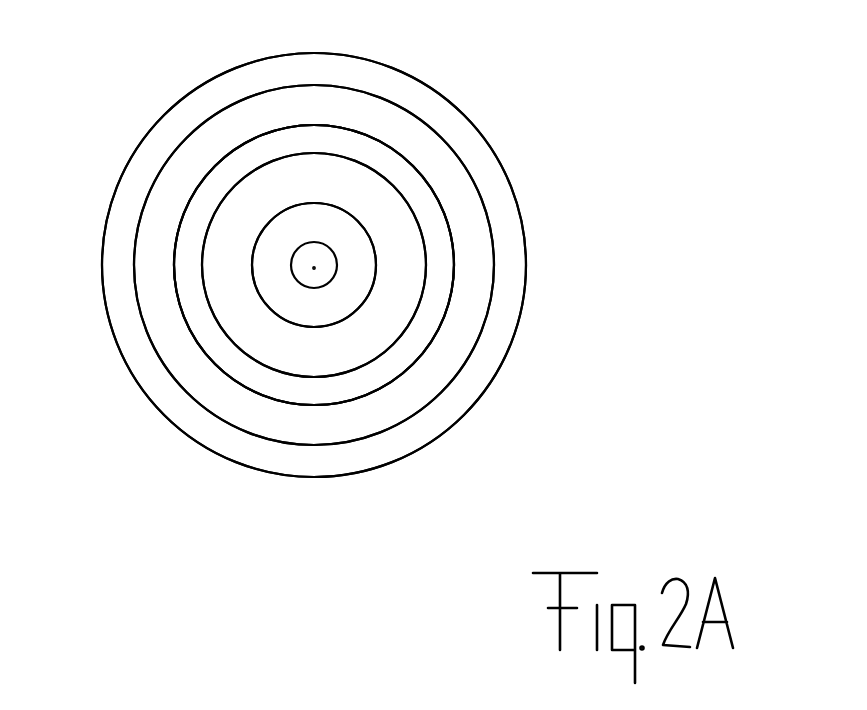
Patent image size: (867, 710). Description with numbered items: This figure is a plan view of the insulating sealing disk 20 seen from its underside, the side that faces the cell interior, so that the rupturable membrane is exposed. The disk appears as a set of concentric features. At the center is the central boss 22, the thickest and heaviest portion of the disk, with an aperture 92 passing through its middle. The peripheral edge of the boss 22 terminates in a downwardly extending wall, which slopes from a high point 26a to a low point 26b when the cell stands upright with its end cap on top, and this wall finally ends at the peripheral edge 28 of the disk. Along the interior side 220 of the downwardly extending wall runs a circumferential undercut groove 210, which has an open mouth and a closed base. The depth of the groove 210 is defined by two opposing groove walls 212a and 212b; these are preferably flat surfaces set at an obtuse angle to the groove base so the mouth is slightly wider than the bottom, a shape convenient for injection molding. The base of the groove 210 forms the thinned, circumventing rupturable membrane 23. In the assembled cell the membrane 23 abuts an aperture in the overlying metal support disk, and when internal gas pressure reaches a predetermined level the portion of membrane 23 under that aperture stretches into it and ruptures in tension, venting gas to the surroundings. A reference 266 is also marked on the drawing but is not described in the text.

The insulating sealing disk 20 is at (73, 147).
The central boss 22 is at (356, 252).
The rupturable membrane 23 is at (309, 134).
The high point 26a is at (373, 284).
The low point 26b is at (146, 321).
The peripheral edge 28 is at (105, 236).
The aperture 92 is at (323, 246).
The undercut groove 210 is at (203, 202).
The groove wall 212a is at (259, 136).
The groove wall 212b is at (342, 150).
The interior side 220 is at (455, 345).
The shield 266 is at (497, 284).